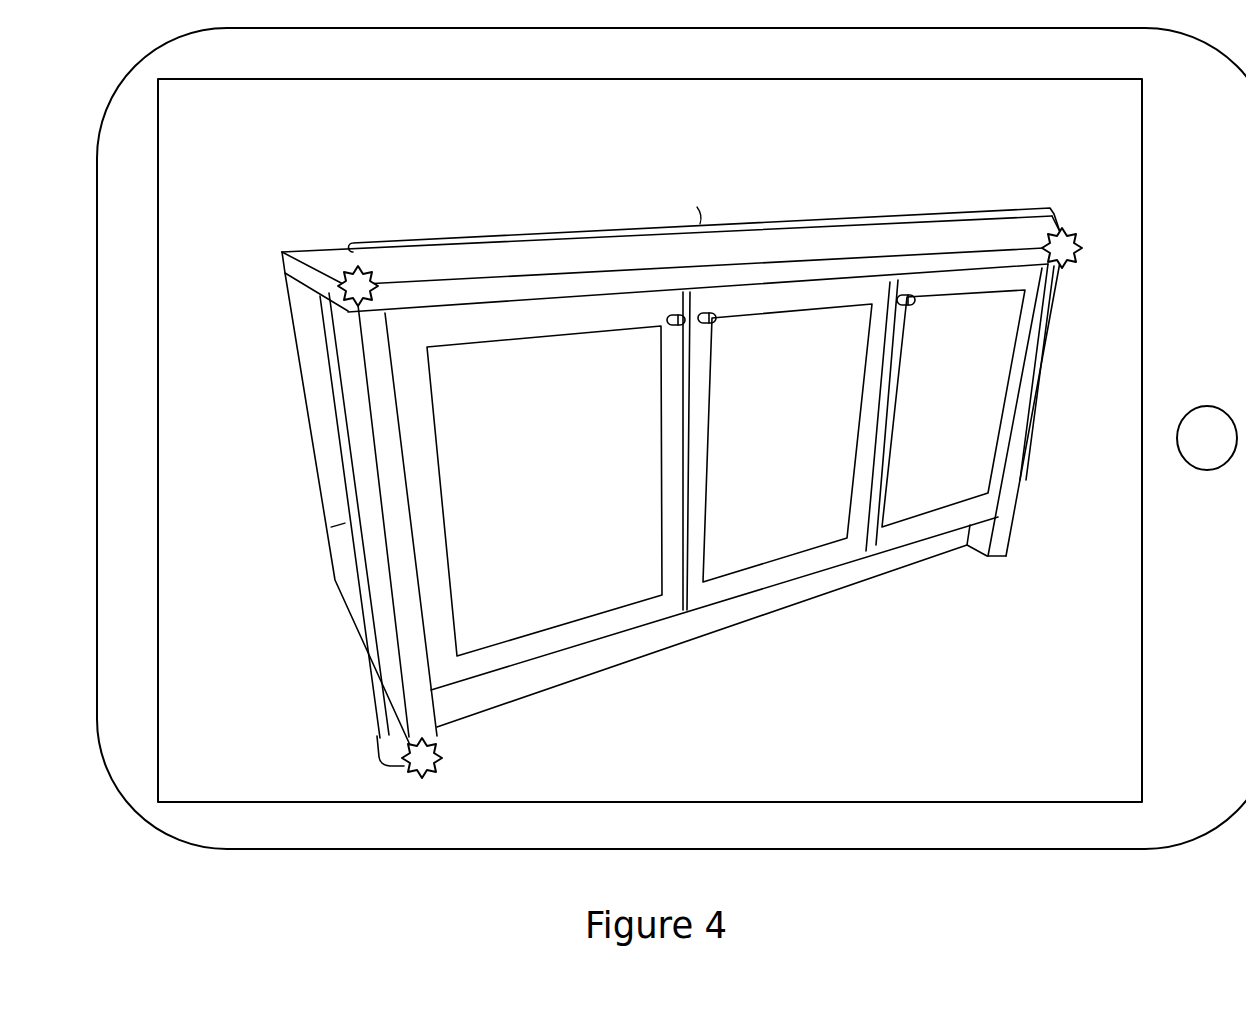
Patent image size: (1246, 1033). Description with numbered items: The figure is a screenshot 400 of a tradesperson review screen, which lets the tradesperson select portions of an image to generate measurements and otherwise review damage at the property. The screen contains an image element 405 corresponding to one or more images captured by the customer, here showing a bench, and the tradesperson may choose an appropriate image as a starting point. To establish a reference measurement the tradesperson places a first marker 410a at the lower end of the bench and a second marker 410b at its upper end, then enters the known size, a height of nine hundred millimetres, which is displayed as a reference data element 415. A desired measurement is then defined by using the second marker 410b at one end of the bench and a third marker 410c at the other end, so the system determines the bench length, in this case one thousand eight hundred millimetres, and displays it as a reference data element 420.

The screenshot 400 is at (892, 72).
The image element 405 is at (948, 660).
The first marker 410a is at (452, 759).
The second marker 410b is at (354, 262).
The third marker 410c is at (1066, 230).
The reference data element 415 is at (221, 493).
The reference data element 420 is at (695, 158).